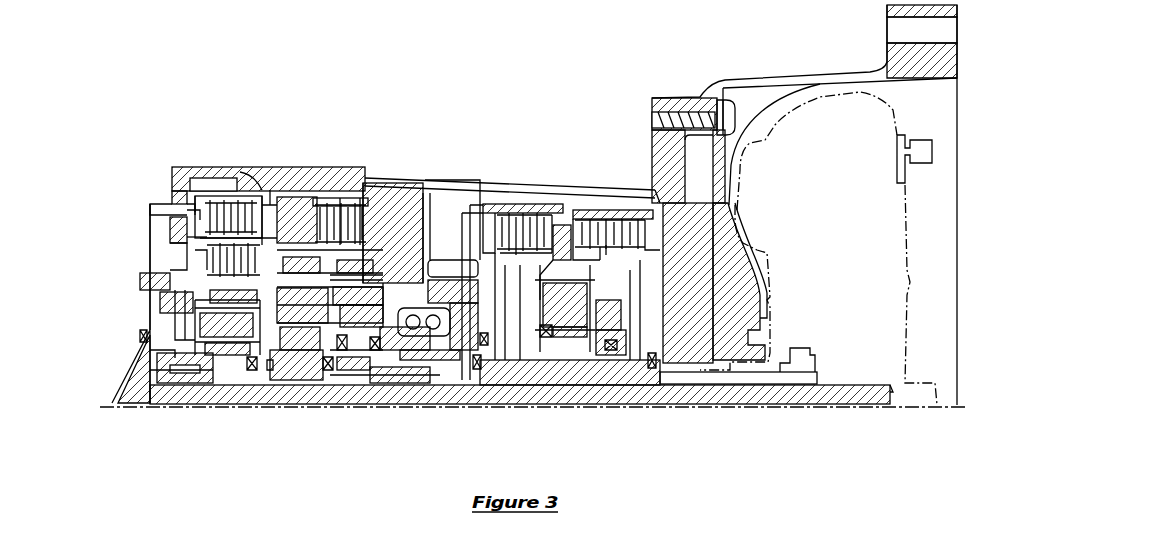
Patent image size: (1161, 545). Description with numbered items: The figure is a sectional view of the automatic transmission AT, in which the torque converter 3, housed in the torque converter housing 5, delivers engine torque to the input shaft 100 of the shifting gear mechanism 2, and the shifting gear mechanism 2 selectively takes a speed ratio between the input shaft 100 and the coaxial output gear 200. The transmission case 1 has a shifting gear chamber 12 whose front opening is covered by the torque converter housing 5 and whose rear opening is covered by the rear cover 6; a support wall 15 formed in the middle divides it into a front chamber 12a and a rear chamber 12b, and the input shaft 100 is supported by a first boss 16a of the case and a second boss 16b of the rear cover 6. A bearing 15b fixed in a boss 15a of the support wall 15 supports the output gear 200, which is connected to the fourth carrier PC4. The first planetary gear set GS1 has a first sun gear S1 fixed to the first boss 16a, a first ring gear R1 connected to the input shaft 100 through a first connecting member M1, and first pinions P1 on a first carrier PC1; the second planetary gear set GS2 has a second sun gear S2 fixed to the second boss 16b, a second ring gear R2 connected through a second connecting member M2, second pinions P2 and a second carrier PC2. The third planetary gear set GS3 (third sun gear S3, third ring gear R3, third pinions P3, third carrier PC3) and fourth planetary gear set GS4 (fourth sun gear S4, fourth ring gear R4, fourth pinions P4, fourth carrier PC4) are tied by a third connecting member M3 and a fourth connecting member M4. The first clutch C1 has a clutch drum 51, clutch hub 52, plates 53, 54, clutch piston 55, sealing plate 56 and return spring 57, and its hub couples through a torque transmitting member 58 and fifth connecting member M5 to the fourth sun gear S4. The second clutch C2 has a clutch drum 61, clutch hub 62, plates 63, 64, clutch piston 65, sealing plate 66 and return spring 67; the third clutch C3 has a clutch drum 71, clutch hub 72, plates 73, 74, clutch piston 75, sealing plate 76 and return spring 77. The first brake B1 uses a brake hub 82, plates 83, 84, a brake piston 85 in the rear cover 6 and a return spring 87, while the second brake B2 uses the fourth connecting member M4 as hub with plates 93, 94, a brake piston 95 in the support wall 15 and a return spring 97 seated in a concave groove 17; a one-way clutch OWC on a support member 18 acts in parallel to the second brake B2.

The transmission case 1 is at (666, 98).
The shifting gear mechanism 2 is at (397, 126).
The torque converter 3 is at (772, 96).
The torque converter housing 5 is at (841, 78).
The rear cover 6 is at (108, 393).
The shifting gear chamber 12 is at (238, 158).
The front chamber 12a is at (613, 200).
The rear chamber 12b is at (267, 180).
The support wall 15 is at (431, 250).
The boss 15a is at (458, 257).
The bearing 15b is at (460, 332).
The first boss 16a is at (646, 322).
The second boss 16b is at (182, 372).
The concave groove 17 is at (300, 205).
The support member 18 is at (300, 220).
The clutch drum 51 is at (606, 235).
The clutch hub 52 is at (546, 280).
The frictional clutch hub plates 53 is at (600, 235).
The frictional clutch drum plates 54 is at (636, 205).
The clutch piston 55 is at (702, 384).
The sealing plate 56 is at (616, 332).
The return spring 57 is at (631, 347).
The torque transmitting member 58 is at (470, 300).
The clutch drum 61 is at (526, 245).
The clutch hub 62 is at (466, 327).
The frictional clutch hub plates 63 is at (505, 235).
The frictional clutch drum plates 64 is at (515, 235).
The clutch piston 65 is at (521, 312).
The sealing plate 66 is at (490, 322).
The return spring 67 is at (501, 332).
The clutch drum 71 is at (180, 237).
The clutch hub 72 is at (210, 297).
The frictional clutch hub plates 73 is at (172, 281).
The frictional clutch drum plates 74 is at (206, 251).
The clutch piston 75 is at (175, 355).
The sealing plate 76 is at (200, 370).
The return spring 77 is at (160, 341).
The brake hub 82 is at (246, 200).
The frictional brake hub plates 83 is at (206, 200).
The frictional brake case plates 84 is at (216, 205).
The brake piston 85 is at (180, 216).
The return spring 87 is at (182, 206).
The frictional brake hub plates 93 is at (366, 240).
The frictional brake case plates 94 is at (356, 225).
The brake piston 95 is at (386, 250).
The return spring 97 is at (346, 215).
The input shaft 100 is at (716, 400).
The output gear 200 is at (452, 250).
The automatic transmission AT is at (611, 86).
The first brake B1 is at (226, 213).
The second brake B2 is at (332, 200).
The first clutch C1 is at (641, 200).
The second clutch C2 is at (546, 200).
The third clutch C3 is at (192, 228).
The one-way clutch OWC is at (290, 205).
The first ring gear R1 is at (590, 245).
The second ring gear R2 is at (185, 312).
The third ring gear R3 is at (285, 258).
The fourth ring gear R4 is at (352, 300).
The first connecting member M1 is at (531, 337).
The second connecting member M2 is at (261, 352).
The third connecting member M3 is at (357, 288).
The fourth connecting member M4 is at (362, 278).
The fifth connecting member M5 is at (440, 362).
The first pinions P1 is at (556, 302).
The second pinions P2 is at (236, 327).
The third pinions P3 is at (302, 308).
The fourth pinions P4 is at (356, 296).
The first carrier PC1 is at (601, 347).
The second carrier PC2 is at (206, 357).
The third carrier PC3 is at (345, 337).
The fourth carrier PC4 is at (392, 332).
The first sun gear S1 is at (570, 357).
The second sun gear S2 is at (226, 347).
The third sun gear S3 is at (300, 342).
The fourth sun gear S4 is at (380, 342).
The first planetary gear set GS1 is at (572, 407).
The second planetary gear set GS2 is at (231, 406).
The third planetary gear set GS3 is at (300, 407).
The fourth planetary gear set GS4 is at (372, 407).